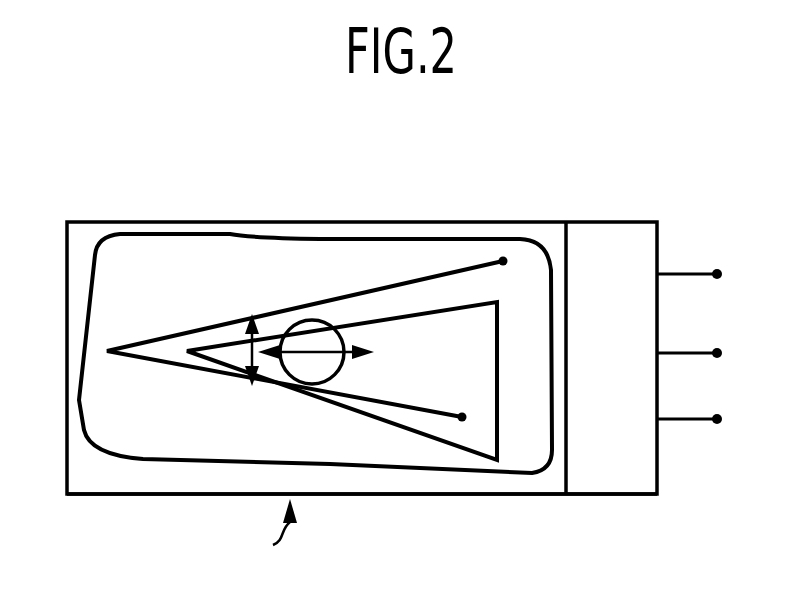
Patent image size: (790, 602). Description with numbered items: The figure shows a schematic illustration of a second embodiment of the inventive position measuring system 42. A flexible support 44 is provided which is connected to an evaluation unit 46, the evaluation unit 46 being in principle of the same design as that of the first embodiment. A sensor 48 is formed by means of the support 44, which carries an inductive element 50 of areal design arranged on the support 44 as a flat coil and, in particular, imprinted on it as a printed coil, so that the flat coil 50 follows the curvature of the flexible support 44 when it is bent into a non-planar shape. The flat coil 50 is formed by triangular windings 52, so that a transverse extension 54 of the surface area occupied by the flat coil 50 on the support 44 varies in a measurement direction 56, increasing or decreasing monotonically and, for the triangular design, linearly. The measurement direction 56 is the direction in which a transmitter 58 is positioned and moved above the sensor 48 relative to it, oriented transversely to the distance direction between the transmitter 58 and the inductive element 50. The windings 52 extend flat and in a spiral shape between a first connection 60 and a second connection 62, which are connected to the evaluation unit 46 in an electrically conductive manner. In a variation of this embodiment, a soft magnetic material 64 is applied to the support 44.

The position measuring system 42 is at (272, 541).
The support 44 is at (332, 221).
The evaluation unit 46 is at (598, 233).
The sensor 48 is at (417, 496).
The inductive element 50 is at (181, 330).
The triangular windings 52 is at (384, 428).
The transverse extension 54 is at (238, 362).
The measurement direction 56 is at (318, 356).
The transmitter 58 is at (328, 330).
The first connection 60 is at (502, 259).
The second connection 62 is at (463, 420).
The soft magnetic material 64 is at (93, 276).